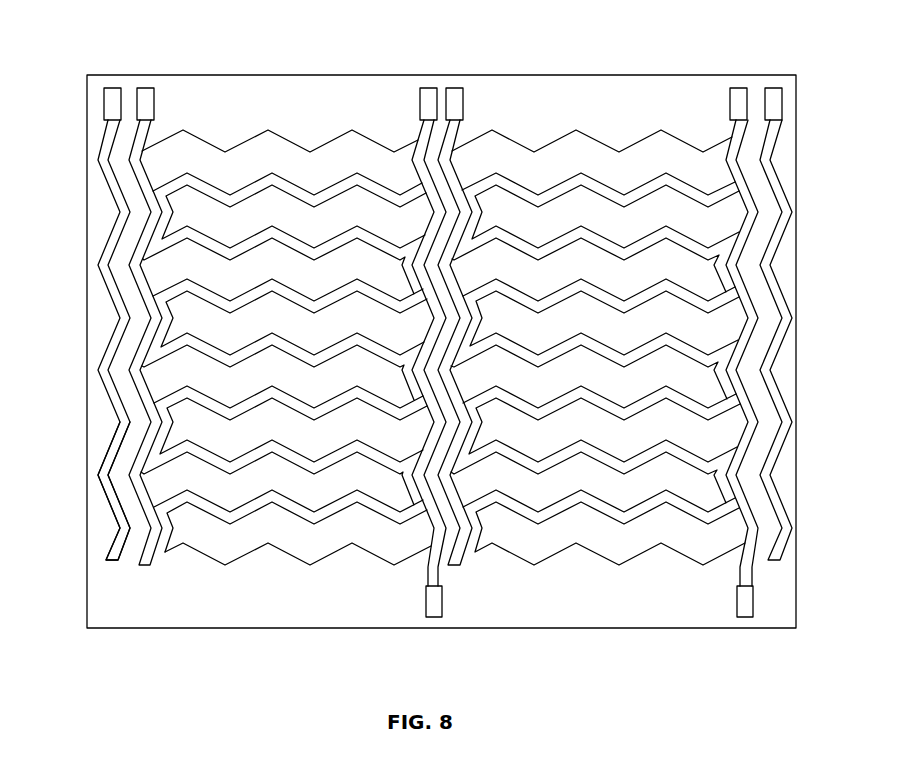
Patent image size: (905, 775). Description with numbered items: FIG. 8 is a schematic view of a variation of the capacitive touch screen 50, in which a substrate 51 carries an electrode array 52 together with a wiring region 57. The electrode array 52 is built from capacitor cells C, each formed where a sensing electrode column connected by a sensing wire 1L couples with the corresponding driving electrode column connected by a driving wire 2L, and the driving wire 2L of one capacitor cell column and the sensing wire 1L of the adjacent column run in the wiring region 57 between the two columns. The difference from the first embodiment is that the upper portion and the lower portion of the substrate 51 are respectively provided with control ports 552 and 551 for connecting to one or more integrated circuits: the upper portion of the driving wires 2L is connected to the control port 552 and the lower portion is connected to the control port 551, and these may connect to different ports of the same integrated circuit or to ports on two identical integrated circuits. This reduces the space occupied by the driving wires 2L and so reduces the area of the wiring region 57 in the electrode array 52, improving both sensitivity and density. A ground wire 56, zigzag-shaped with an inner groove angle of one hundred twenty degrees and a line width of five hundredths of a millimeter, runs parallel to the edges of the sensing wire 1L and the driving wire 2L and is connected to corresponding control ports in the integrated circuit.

The capacitive touch screen 50 is at (75, 351).
The substrate 51 is at (97, 248).
The electrode array 52 is at (273, 565).
The ground wire 56 is at (112, 511).
The wiring region 57 is at (468, 125).
The control port 551 is at (433, 602).
The control port 552 is at (773, 103).
The sensing wire 1L is at (155, 567).
The driving wire 2L is at (742, 262).
The capacitor cell C is at (752, 481).